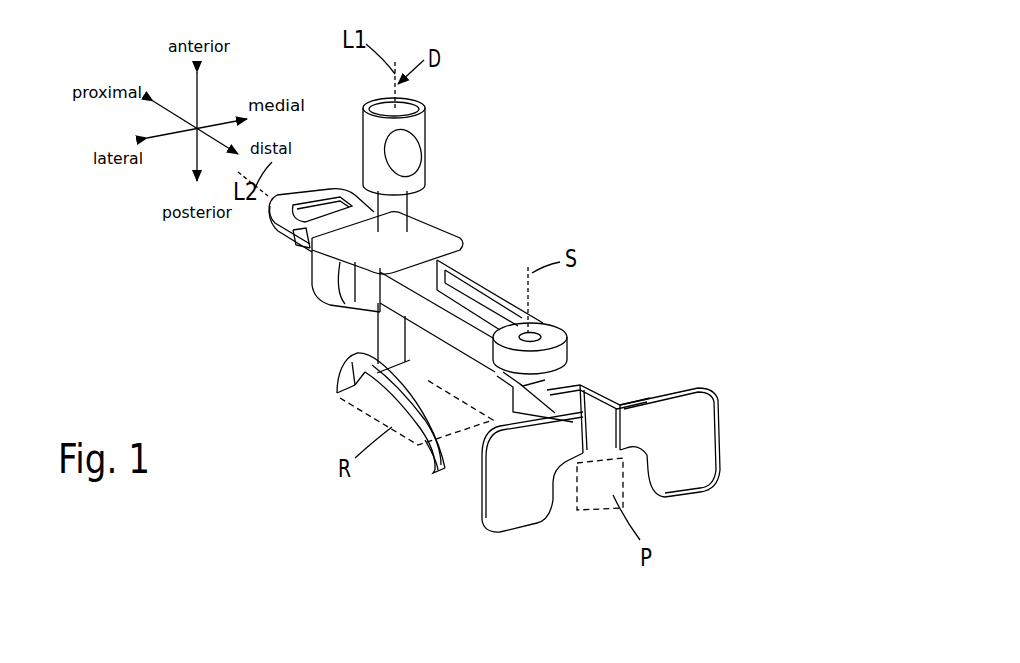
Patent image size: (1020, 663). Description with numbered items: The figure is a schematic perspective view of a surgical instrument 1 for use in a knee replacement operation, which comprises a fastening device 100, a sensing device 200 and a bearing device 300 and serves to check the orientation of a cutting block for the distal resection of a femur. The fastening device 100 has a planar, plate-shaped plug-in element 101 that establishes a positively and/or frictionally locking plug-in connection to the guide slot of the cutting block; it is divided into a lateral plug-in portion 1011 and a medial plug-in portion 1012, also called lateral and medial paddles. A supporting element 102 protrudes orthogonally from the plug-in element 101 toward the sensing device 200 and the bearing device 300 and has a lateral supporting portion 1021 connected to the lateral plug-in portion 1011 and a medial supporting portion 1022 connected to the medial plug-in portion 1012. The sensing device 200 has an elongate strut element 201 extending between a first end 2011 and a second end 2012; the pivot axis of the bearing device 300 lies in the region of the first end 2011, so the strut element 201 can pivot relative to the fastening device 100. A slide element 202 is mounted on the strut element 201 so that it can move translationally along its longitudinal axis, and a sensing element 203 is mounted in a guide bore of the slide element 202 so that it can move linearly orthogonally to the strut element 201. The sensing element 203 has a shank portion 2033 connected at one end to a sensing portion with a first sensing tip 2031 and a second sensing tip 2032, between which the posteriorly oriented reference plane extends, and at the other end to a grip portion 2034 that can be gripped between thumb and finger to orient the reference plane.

The surgical instrument 1 is at (600, 190).
The fastening device 100 is at (599, 398).
The plug-in element 101 is at (622, 477).
The lateral plug-in portion 1011 is at (492, 490).
The medial plug-in portion 1012 is at (705, 488).
The supporting element 102 is at (554, 419).
The lateral supporting portion 1021 is at (507, 420).
The medial supporting portion 1022 is at (604, 380).
The sensing device 200 is at (265, 309).
The strut element 201 is at (283, 248).
The first end 2011 is at (550, 335).
The second end 2012 is at (272, 222).
The slide element 202 is at (332, 316).
The sensing element 203 is at (395, 214).
The first sensing tip 2031 is at (357, 393).
The second sensing tip 2032 is at (433, 472).
The shank portion 2033 is at (385, 210).
The grip portion 2034 is at (373, 130).
The bearing device 300 is at (517, 250).